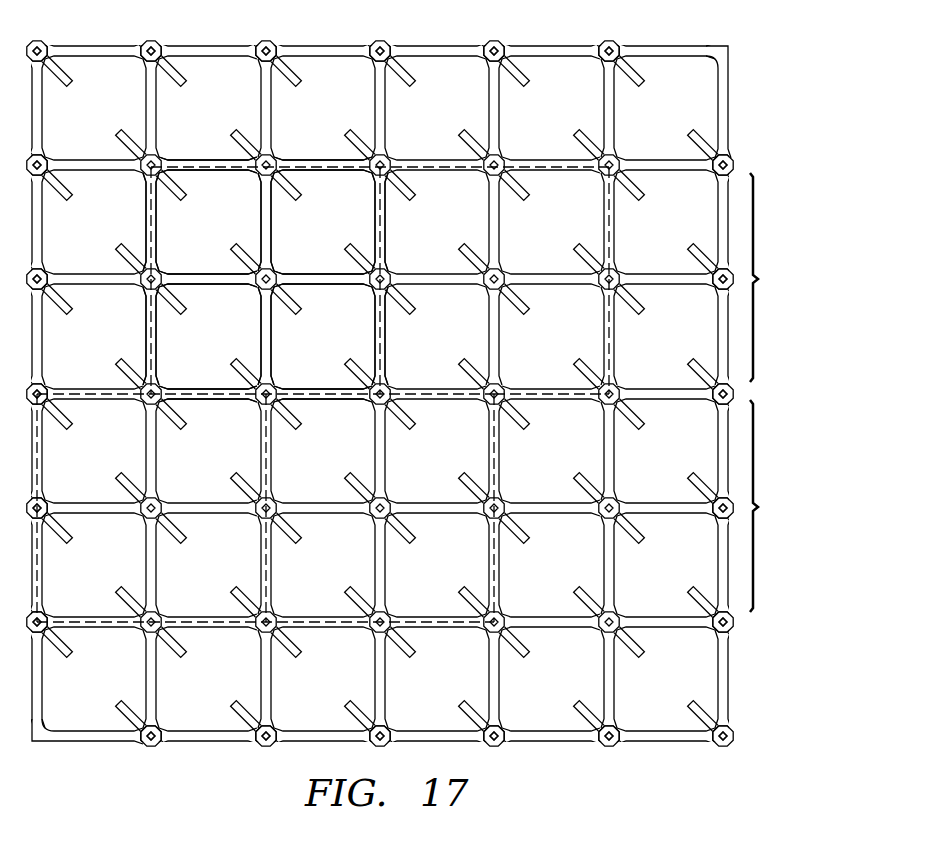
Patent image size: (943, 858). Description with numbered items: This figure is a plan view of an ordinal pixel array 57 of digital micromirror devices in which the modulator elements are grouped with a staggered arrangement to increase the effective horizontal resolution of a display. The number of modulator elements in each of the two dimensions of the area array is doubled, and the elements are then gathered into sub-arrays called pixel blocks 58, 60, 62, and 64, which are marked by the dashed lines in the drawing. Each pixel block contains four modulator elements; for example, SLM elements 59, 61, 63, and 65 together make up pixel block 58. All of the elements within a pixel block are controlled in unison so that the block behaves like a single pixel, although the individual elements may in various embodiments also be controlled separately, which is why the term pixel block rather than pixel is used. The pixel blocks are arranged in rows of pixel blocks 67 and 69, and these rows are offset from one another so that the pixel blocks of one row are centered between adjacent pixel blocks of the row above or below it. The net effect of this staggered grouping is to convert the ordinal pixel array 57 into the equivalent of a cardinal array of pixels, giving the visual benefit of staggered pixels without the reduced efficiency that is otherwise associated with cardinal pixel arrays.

The ordinal pixel array 57 is at (763, 66).
The pixel block 58 is at (204, 165).
The SLM element 59 is at (226, 240).
The pixel block 60 is at (612, 242).
The SLM element 61 is at (338, 240).
The pixel block 62 is at (99, 391).
The SLM element 63 is at (226, 349).
The pixel block 64 is at (434, 626).
The SLM element 65 is at (338, 349).
The row of pixel blocks 67 is at (773, 277).
The row of pixel blocks 69 is at (773, 506).